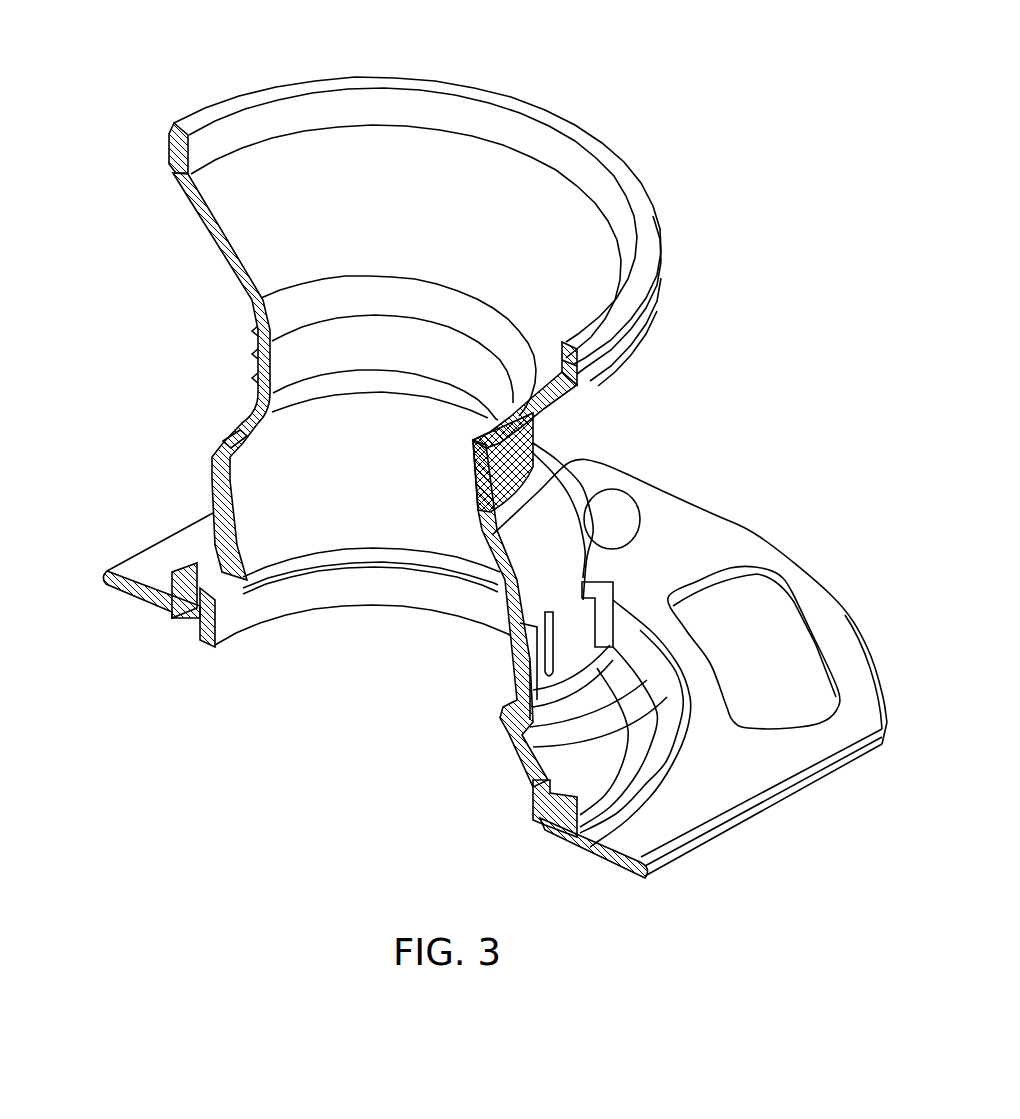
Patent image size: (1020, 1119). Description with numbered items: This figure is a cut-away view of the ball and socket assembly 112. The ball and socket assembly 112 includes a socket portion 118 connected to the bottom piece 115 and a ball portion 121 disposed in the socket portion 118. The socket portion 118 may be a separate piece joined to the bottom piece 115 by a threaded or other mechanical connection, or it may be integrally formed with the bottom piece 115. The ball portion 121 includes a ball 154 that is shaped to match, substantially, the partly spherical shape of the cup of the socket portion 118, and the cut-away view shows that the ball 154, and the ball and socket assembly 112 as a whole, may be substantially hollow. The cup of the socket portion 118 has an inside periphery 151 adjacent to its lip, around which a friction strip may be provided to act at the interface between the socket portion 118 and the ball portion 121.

The ball and socket assembly 112 is at (149, 53).
The ball 154 is at (347, 163).
The ball portion 121 is at (660, 273).
The inside periphery 151 is at (555, 500).
The socket portion 118 is at (707, 521).
The bottom piece 115 is at (735, 778).